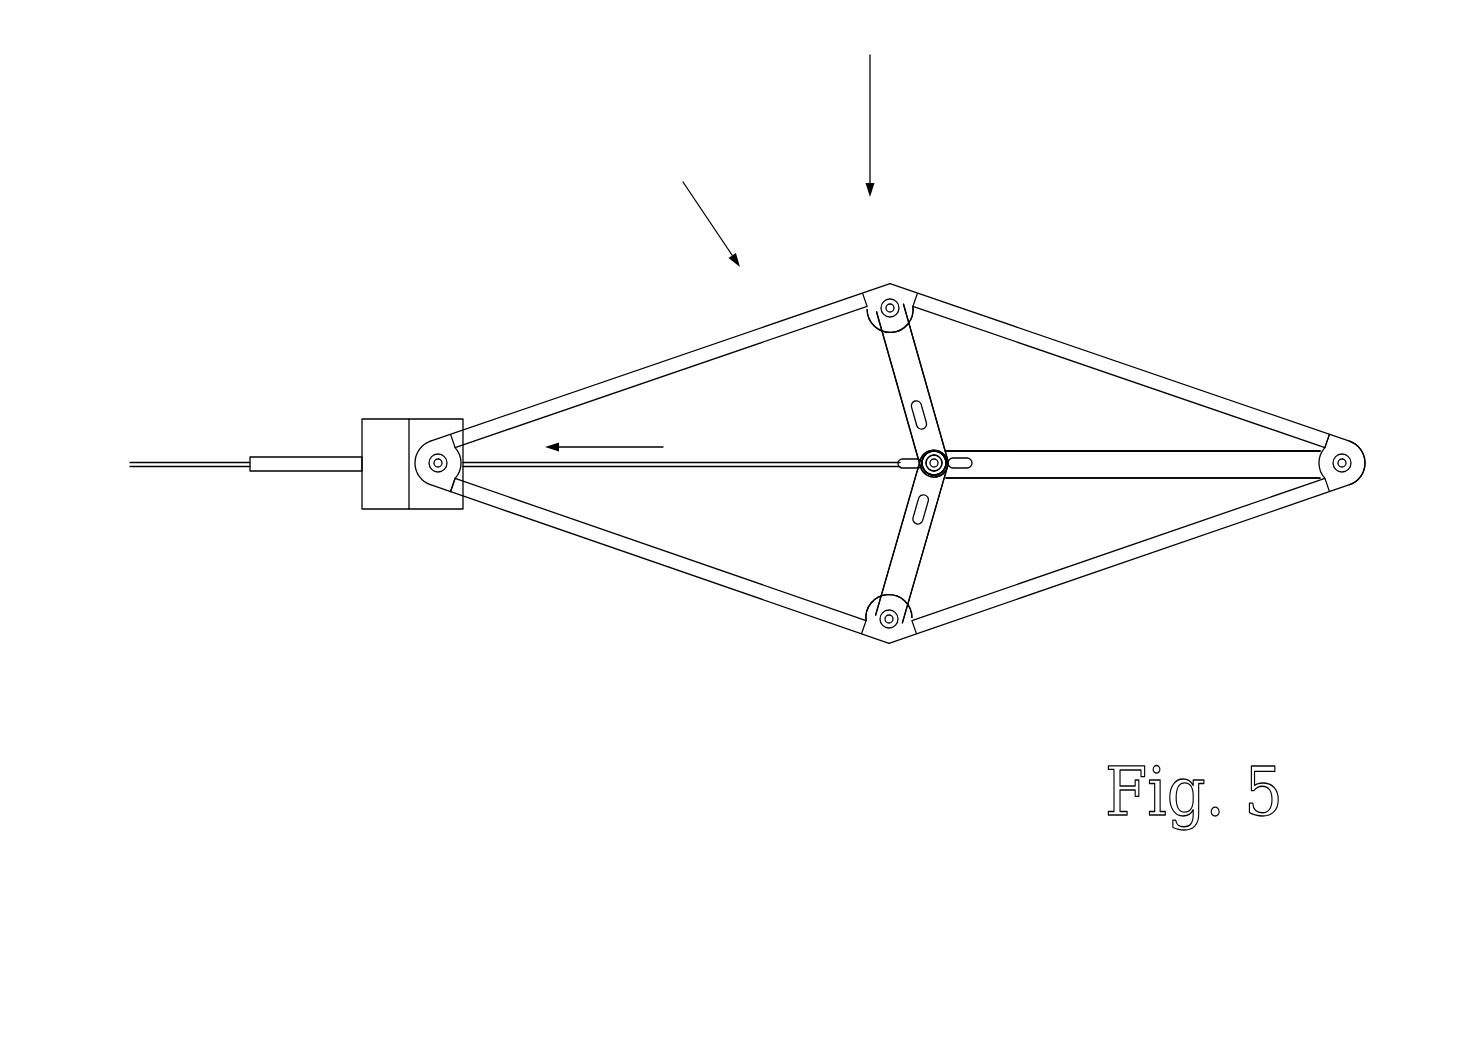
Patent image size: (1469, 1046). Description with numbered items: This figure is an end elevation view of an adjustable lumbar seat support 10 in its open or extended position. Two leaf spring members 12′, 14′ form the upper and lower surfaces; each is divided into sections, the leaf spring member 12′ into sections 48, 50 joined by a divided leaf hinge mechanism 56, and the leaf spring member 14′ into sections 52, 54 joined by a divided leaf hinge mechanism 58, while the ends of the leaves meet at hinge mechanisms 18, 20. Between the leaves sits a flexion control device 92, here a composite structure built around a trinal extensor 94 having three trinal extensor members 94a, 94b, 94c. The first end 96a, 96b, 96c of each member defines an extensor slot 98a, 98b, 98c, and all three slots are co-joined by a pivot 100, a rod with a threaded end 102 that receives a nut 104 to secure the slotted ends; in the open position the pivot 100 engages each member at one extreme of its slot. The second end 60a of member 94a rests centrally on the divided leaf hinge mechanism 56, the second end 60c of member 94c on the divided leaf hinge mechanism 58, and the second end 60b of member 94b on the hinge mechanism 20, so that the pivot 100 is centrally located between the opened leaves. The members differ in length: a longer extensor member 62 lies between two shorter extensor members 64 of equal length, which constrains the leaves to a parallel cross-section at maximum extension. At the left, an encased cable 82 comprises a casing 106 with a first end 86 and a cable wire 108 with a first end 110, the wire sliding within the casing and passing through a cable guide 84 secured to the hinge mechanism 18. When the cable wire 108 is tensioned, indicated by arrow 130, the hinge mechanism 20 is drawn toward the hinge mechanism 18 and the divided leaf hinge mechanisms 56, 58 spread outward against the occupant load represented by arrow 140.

The adjustable lumbar seat support 10 is at (702, 206).
The leaf spring member 12′ is at (1124, 347).
The leaf spring member 14′ is at (696, 594).
The hinge mechanism 18 is at (438, 465).
The hinge mechanism 20 is at (1344, 456).
The section 48 is at (1253, 407).
The section 50 is at (531, 406).
The section 52 is at (1130, 560).
The section 54 is at (516, 518).
The divided leaf hinge mechanism 56 is at (888, 300).
The divided leaf hinge mechanism 58 is at (880, 630).
The second end 60a is at (931, 331).
The second end 60b is at (1288, 443).
The second end 60c is at (931, 621).
The longer extensor member 62 is at (1120, 485).
The shorter extensor member 64 is at (884, 338).
The encased cable 82 is at (252, 497).
The cable guide 84 is at (434, 419).
The first end 86 is at (336, 425).
The flexion control device 92 is at (744, 507).
The trinal extensor 94 is at (1067, 430).
The trinal extensor member 94a is at (893, 371).
The trinal extensor member 94b is at (1133, 444).
The trinal extensor member 94c is at (894, 550).
The first end 96a is at (871, 422).
The first end 96b is at (973, 489).
The first end 96c is at (895, 491).
The extensor slot 98a is at (920, 413).
The extensor slot 98b is at (958, 459).
The extensor slot 98c is at (921, 518).
The pivot 100 is at (928, 460).
The threaded end 102 is at (945, 475).
The nut 104 is at (956, 426).
The casing 106 is at (318, 470).
The cable wire 108 is at (153, 467).
The first end 110 is at (880, 472).
The arrow 130 is at (612, 447).
The arrow 140 is at (870, 110).